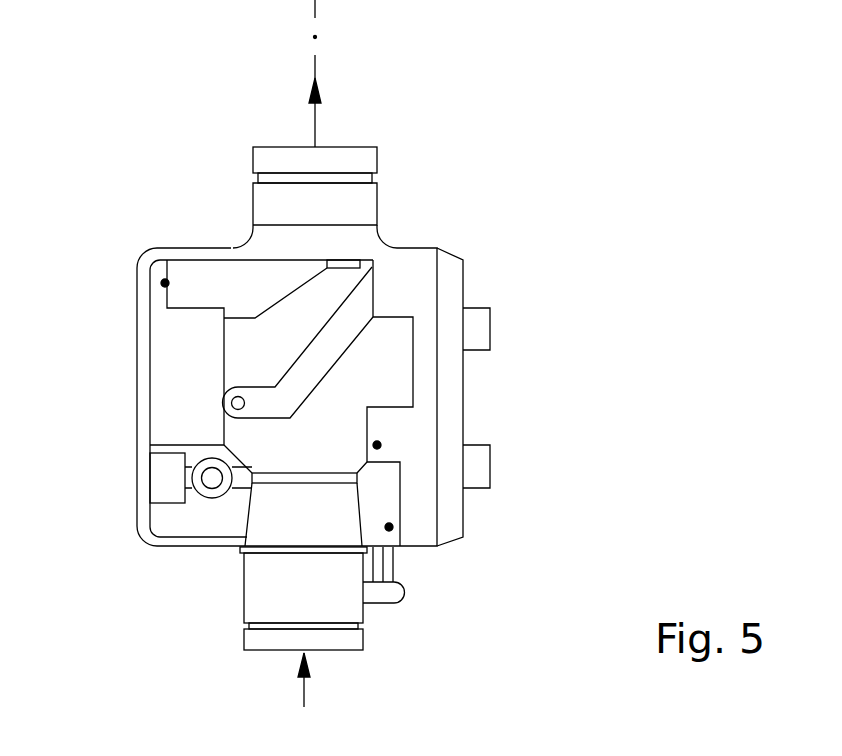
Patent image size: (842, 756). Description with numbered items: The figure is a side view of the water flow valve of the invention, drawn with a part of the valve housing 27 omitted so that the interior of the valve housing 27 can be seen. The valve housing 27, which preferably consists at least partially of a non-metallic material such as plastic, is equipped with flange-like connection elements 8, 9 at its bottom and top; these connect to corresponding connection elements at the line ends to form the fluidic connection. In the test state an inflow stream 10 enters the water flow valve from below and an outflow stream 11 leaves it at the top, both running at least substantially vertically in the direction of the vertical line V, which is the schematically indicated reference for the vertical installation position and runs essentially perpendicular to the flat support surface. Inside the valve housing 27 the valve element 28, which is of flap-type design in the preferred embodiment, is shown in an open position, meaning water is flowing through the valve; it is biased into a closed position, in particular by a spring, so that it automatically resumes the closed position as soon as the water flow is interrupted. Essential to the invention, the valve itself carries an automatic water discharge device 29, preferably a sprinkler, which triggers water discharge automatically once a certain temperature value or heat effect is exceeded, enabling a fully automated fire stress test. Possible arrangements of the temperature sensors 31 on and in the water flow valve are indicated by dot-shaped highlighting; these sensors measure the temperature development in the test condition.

The connection element 8 is at (273, 603).
The connection element 9 is at (363, 200).
The inflow stream 10 is at (304, 693).
The outflow stream 11 is at (313, 128).
The valve housing 27 is at (152, 257).
The valve element 28 is at (308, 363).
The water discharge device 29 is at (393, 592).
The temperature sensor 31 is at (165, 283).
The vertical line V is at (313, 15).